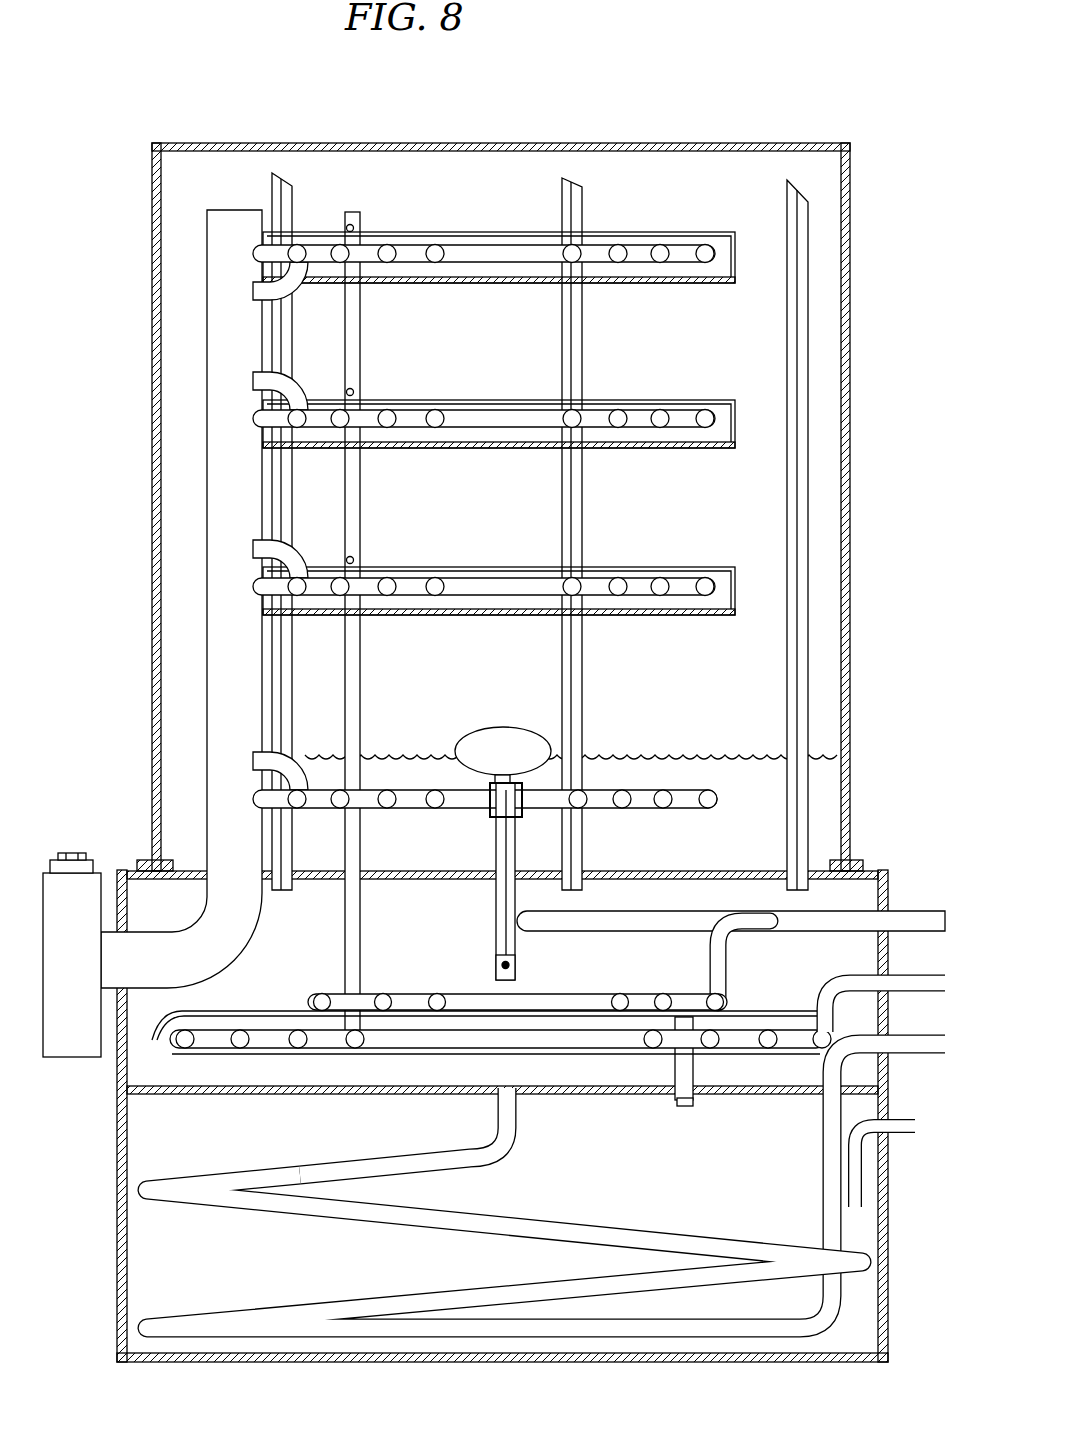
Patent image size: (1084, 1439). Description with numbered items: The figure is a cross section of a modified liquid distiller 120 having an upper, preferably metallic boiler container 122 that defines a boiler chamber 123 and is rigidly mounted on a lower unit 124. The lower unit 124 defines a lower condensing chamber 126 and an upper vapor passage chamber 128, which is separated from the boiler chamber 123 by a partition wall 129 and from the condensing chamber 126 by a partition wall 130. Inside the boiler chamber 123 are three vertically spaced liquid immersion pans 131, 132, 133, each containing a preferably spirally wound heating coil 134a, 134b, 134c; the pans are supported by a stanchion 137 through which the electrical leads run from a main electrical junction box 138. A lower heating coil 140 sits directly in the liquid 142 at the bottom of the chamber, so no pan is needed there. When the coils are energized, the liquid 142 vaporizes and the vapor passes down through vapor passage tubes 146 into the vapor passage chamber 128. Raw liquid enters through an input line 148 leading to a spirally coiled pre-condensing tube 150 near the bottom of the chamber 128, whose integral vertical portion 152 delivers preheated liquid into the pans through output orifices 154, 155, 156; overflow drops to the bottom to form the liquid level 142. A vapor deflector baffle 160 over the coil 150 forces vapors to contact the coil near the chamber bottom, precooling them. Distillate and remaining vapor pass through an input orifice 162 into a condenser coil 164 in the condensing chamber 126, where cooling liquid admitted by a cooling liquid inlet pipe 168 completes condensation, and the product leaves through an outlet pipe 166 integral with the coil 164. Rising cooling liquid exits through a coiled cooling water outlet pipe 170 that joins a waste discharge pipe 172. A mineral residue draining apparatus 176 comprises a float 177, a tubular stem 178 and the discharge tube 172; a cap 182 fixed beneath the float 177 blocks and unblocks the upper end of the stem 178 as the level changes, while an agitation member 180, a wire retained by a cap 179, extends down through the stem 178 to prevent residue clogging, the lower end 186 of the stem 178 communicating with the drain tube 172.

The distiller 120 is at (639, 140).
The boiler container 122 is at (737, 147).
The boiler chamber 123 is at (692, 338).
The lower unit 124 is at (874, 863).
The condensing chamber 126 is at (632, 1188).
The vapor passage chamber 128 is at (607, 958).
The partition wall 129 is at (660, 871).
The partition wall 130 is at (232, 1094).
The liquid immersion pan 131 is at (470, 283).
The liquid immersion pan 132 is at (480, 448).
The liquid immersion pan 133 is at (465, 615).
The heating coil 134a is at (392, 250).
The heating coil 134b is at (392, 418).
The heating coil 134c is at (392, 586).
The stanchion 137 is at (207, 405).
The main electrical junction box 138 is at (72, 1057).
The lower heating coil 140 is at (390, 790).
The liquid 142 is at (571, 772).
The vapor passage tube 146 is at (285, 200).
The input line 148 is at (895, 980).
The pre-condensing tube 150 is at (622, 1050).
The vertical portion 152 is at (347, 920).
The output orifice 154 is at (355, 228).
The output orifice 155 is at (355, 392).
The output orifice 156 is at (355, 560).
The vapor deflector baffle 160 is at (722, 1015).
The input orifice 162 is at (501, 1086).
The condenser coil 164 is at (477, 1165).
The outlet pipe 166 is at (905, 1044).
The cooling liquid inlet pipe 168 is at (905, 1138).
The cooling water outlet pipe 170 is at (322, 995).
The waste discharge pipe 172 is at (585, 918).
The mineral residue solution draining apparatus 176 is at (498, 735).
The float 177 is at (512, 738).
The tubular stem 178 is at (493, 838).
The cap 179 is at (494, 970).
The agitation member 180 is at (515, 855).
The cap 182 is at (488, 815).
The lower end 186 is at (488, 920).